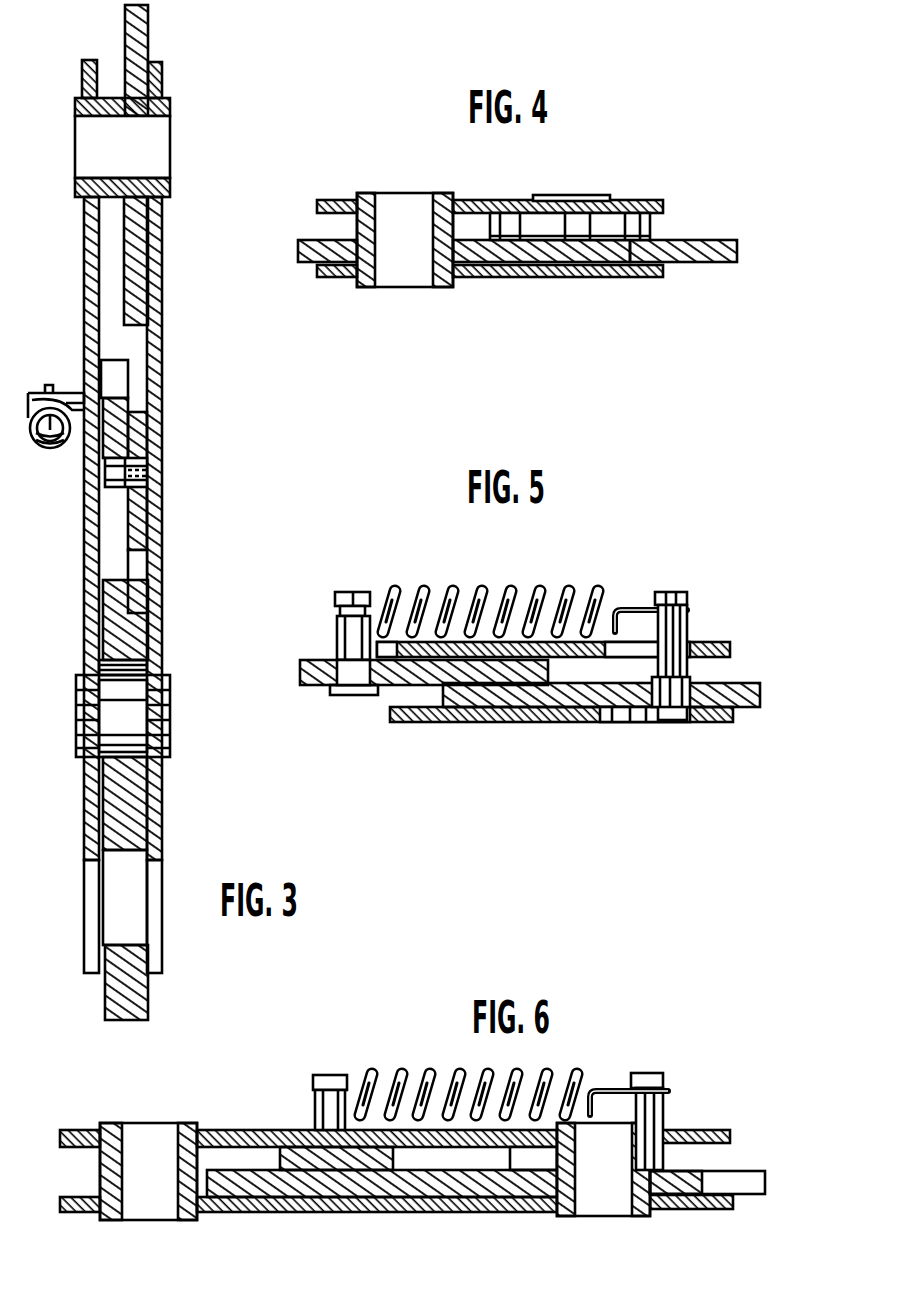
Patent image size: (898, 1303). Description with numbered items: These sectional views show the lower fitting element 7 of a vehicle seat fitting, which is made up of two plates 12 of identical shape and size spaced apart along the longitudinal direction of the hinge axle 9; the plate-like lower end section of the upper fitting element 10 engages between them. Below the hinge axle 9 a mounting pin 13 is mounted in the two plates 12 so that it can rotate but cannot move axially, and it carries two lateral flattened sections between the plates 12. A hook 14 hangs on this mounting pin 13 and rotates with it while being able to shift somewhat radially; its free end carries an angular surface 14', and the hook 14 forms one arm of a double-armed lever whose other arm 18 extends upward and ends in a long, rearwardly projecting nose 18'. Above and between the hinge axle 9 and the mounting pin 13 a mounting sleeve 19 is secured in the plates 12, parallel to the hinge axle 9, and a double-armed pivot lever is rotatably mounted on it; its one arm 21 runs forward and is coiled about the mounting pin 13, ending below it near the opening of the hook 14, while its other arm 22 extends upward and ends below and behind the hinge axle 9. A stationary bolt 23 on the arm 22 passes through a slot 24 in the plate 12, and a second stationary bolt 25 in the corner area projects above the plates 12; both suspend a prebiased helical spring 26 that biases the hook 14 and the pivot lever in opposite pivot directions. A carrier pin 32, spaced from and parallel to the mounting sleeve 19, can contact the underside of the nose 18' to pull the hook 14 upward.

In FIG. 3, the lower fitting element 7 is at (176, 465).
In FIG. 4, the hinge axle 9 is at (398, 200).
In FIG. 3, the upper fitting element 10 is at (150, 37).
In FIG. 4, the upper fitting element 10 is at (588, 262).
In FIG. 3, the plates 12 is at (88, 273).
In FIG. 4, the plates 12 is at (638, 205).
In FIG. 5, the plates 12 is at (726, 649).
In FIG. 6, the plates 12 is at (234, 1130).
In FIG. 3, the mounting pin 13 is at (170, 741).
In FIG. 3, the hook 14 is at (166, 851).
In FIG. 3, the angular surface 14' is at (107, 1005).
In FIG. 5, the arm 18 is at (417, 707).
In FIG. 6, the arm 18 is at (418, 1174).
In FIG. 3, the nose 18' is at (162, 446).
In FIG. 6, the mounting sleeve 19 is at (602, 1210).
In FIG. 6, the arm 21 is at (416, 1197).
In FIG. 4, the arm 22 is at (692, 262).
In FIG. 5, the arm 22 is at (528, 708).
In FIG. 6, the arm 22 is at (676, 1194).
In FIG. 5, the stationary bolt 23 is at (682, 599).
In FIG. 5, the slot 24 is at (628, 722).
In FIG. 5, the second stationary bolt 25 is at (346, 592).
In FIG. 3, the helical spring 26 is at (46, 450).
In FIG. 5, the helical spring 26 is at (514, 589).
In FIG. 3, the carrier pin 32 is at (112, 489).